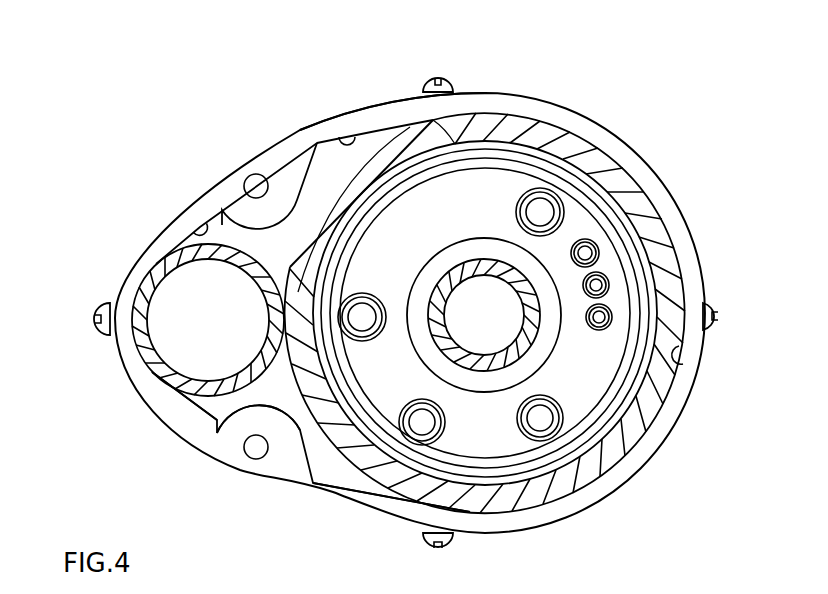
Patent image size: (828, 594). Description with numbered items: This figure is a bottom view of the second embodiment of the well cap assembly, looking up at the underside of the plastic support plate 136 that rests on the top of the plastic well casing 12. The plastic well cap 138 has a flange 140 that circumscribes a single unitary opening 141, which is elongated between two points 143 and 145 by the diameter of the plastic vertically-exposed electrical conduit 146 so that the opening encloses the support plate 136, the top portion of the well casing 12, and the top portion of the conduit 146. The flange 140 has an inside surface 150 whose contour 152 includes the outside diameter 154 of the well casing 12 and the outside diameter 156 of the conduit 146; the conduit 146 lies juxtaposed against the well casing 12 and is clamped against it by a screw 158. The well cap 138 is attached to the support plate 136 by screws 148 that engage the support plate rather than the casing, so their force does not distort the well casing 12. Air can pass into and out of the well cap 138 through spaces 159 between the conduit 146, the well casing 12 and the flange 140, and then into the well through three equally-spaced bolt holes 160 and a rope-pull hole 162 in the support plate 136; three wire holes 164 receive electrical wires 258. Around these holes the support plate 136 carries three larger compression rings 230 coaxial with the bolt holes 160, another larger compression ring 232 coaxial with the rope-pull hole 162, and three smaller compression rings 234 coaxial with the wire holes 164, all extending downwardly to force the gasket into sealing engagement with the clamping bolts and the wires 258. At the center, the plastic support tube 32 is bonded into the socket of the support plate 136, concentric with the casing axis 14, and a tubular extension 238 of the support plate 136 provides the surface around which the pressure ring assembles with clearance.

The well casing 12 is at (363, 481).
The casing axis 14 is at (488, 294).
The support tube 32 is at (437, 283).
The support plate 136 is at (408, 217).
The well cap 138 is at (271, 128).
The flange 140 is at (378, 101).
The unitary opening 141 is at (318, 478).
The point 143 is at (142, 328).
The point 145 is at (675, 365).
The electrical conduit 146 is at (170, 292).
The screws 148 is at (456, 83).
The inside surface 150 is at (350, 132).
The contour 152 is at (197, 230).
The outside diameter 154 is at (393, 128).
The outside diameter 156 is at (218, 407).
The screw 158 is at (100, 306).
The spaces 159 is at (216, 418).
The bolt holes 160 is at (531, 424).
The rope-pull hole 162 is at (423, 418).
The wire holes 164 is at (594, 329).
The larger compression rings 230 is at (523, 197).
The larger compression ring 232 is at (437, 411).
The smaller compression rings 234 is at (587, 240).
The tubular extension 238 is at (437, 257).
The electrical wires 258 is at (609, 283).